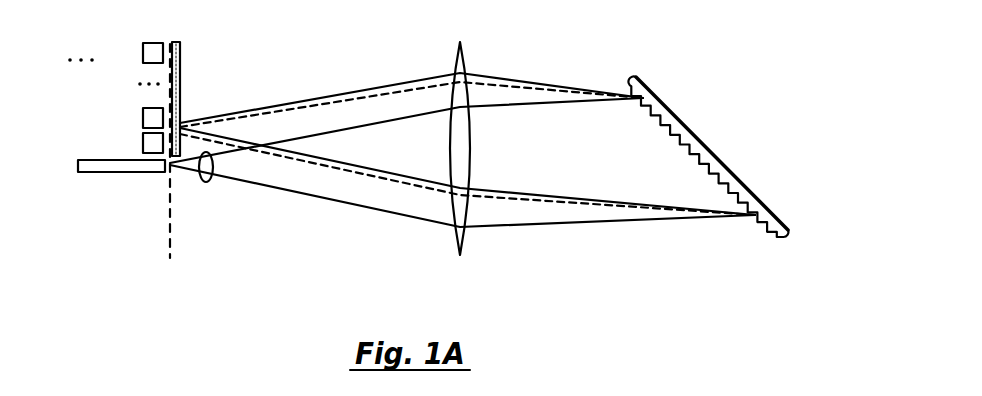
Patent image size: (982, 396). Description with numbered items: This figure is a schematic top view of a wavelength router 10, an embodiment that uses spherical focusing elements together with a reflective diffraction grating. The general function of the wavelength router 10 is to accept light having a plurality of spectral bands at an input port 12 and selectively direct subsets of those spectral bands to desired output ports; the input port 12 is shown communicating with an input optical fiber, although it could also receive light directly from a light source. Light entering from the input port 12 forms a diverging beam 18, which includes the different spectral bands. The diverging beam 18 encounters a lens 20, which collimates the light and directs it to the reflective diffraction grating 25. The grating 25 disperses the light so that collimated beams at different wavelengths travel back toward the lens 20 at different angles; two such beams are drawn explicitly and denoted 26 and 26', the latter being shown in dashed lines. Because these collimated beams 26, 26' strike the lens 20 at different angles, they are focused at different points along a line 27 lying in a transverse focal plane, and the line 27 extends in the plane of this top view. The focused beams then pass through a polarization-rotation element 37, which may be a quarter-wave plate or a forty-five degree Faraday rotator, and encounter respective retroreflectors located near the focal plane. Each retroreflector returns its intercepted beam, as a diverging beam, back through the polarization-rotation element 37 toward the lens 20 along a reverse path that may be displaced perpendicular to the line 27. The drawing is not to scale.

The polarization-rotation element 37 is at (182, 63).
The input port 12 is at (151, 173).
The line 27 is at (170, 228).
The diverging beam 18 is at (205, 181).
The wavelength router 10 is at (218, 237).
The collimated beam 26 is at (411, 82).
The collimated beam 26' is at (411, 72).
The lens 20 is at (452, 236).
The reflective diffraction grating 25 is at (638, 78).